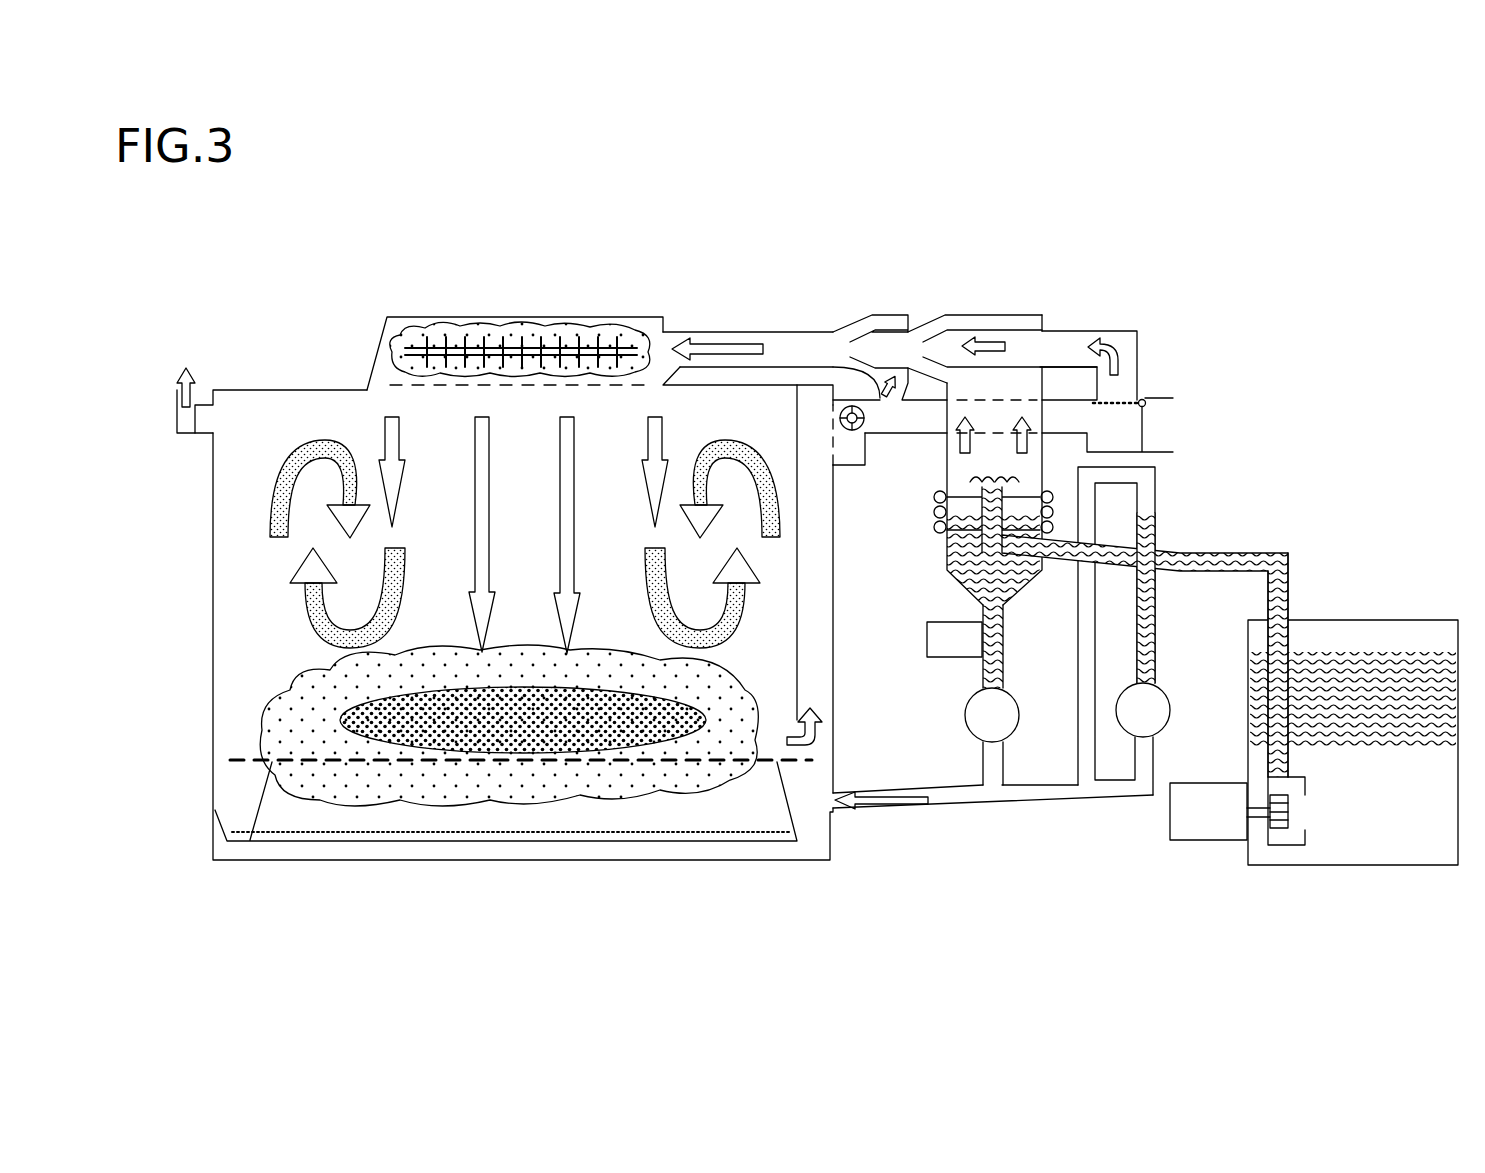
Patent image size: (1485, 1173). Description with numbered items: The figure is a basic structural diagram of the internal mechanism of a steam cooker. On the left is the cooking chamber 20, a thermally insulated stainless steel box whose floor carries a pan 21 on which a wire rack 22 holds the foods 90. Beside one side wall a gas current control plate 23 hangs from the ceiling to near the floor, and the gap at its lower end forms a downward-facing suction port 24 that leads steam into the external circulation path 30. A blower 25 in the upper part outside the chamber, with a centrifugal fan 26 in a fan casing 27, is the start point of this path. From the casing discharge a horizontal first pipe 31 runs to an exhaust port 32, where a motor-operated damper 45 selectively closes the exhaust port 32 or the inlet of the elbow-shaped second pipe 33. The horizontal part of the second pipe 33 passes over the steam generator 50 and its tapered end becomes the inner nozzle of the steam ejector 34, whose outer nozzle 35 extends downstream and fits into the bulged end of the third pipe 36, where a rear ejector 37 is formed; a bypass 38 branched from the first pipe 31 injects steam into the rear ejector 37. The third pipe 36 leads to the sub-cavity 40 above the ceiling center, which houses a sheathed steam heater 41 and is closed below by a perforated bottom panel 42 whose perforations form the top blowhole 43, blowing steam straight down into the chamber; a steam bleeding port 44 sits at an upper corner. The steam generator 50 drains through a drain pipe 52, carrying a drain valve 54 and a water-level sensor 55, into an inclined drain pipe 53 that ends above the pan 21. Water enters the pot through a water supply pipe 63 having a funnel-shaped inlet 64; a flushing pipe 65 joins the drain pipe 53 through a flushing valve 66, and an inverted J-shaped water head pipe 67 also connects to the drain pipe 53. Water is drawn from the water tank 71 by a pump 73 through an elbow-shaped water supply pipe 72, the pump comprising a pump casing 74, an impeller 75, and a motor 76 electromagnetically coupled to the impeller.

The cooking chamber 20 is at (262, 406).
The pan 21 is at (213, 826).
The rack 22 is at (240, 760).
The gas current control plate 23 is at (793, 585).
The suction port 24 is at (822, 693).
The blower 25 is at (815, 400).
The centrifugal fan 26 is at (858, 432).
The fan casing 27 is at (846, 470).
The external circulation path 30 is at (1092, 306).
The first pipe 31 is at (918, 436).
The exhaust port 32 is at (1165, 406).
The second pipe 33 is at (1140, 345).
The steam ejector 34 is at (934, 310).
The outer nozzle 35 is at (880, 313).
The third pipe 36 is at (745, 330).
The rear ejector 37 is at (853, 320).
The bypass 38 is at (840, 378).
The sub-cavity 40 is at (400, 316).
The steam heater 41 is at (530, 346).
The bottom panel 42 is at (521, 390).
The top blowhole 43 is at (428, 390).
The steam bleeding port 44 is at (200, 436).
The damper 45 is at (1145, 432).
The steam generator 50 is at (995, 310).
The drain pipe 52 is at (1010, 675).
The drain pipe 53 is at (953, 810).
The drain valve 54 is at (963, 712).
The water-level sensor 55 is at (926, 640).
The water supply pipe 63 is at (1050, 560).
The inlet 64 is at (1186, 578).
The flushing pipe 65 is at (1162, 646).
The flushing valve 66 is at (1173, 716).
The water head pipe 67 is at (1160, 492).
The water tank 71 is at (1412, 620).
The water supply pipe 72 is at (1292, 590).
The pump 73 is at (1322, 848).
The pump casing 74 is at (1294, 847).
The impeller 75 is at (1278, 832).
The motor 76 is at (1200, 843).
The foods 90 is at (318, 690).